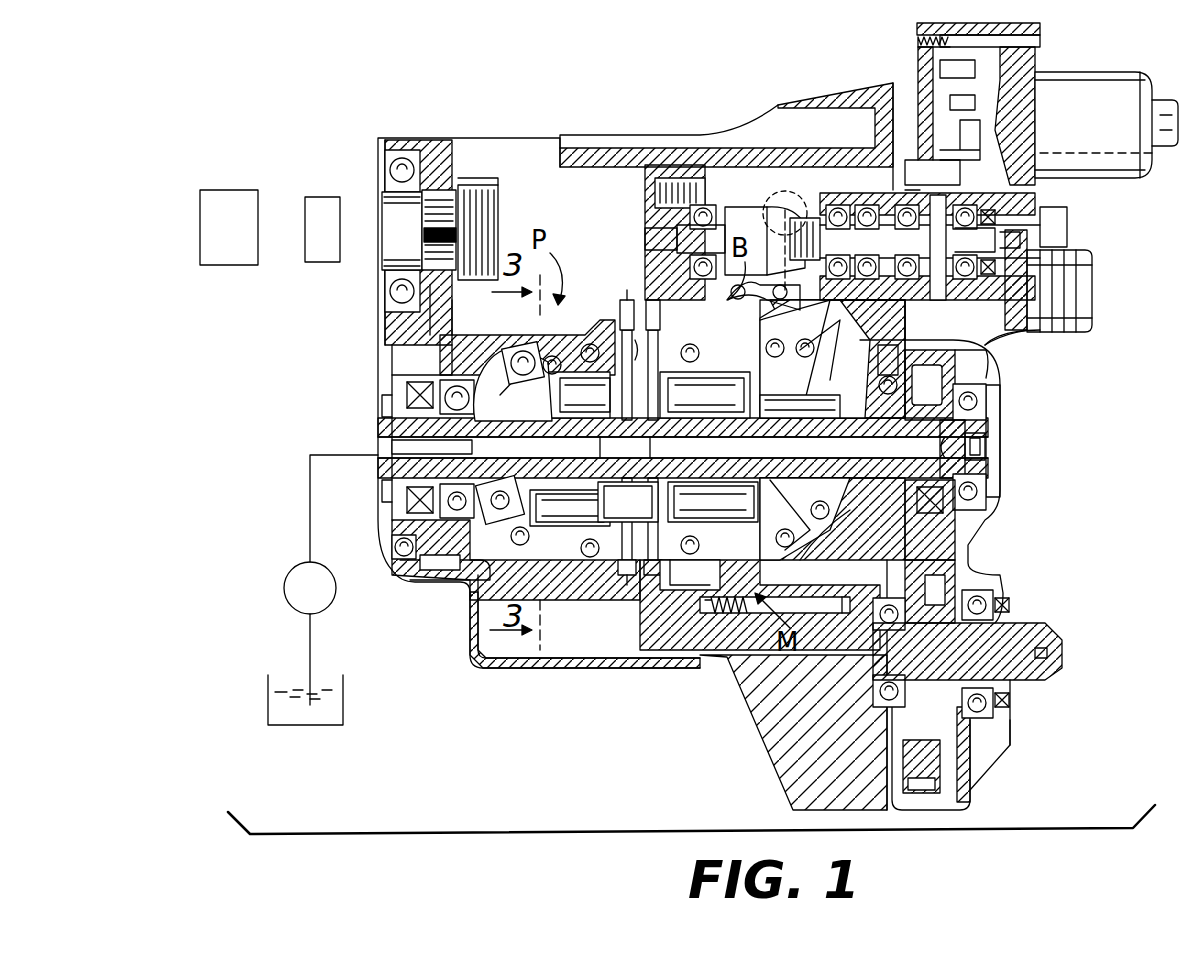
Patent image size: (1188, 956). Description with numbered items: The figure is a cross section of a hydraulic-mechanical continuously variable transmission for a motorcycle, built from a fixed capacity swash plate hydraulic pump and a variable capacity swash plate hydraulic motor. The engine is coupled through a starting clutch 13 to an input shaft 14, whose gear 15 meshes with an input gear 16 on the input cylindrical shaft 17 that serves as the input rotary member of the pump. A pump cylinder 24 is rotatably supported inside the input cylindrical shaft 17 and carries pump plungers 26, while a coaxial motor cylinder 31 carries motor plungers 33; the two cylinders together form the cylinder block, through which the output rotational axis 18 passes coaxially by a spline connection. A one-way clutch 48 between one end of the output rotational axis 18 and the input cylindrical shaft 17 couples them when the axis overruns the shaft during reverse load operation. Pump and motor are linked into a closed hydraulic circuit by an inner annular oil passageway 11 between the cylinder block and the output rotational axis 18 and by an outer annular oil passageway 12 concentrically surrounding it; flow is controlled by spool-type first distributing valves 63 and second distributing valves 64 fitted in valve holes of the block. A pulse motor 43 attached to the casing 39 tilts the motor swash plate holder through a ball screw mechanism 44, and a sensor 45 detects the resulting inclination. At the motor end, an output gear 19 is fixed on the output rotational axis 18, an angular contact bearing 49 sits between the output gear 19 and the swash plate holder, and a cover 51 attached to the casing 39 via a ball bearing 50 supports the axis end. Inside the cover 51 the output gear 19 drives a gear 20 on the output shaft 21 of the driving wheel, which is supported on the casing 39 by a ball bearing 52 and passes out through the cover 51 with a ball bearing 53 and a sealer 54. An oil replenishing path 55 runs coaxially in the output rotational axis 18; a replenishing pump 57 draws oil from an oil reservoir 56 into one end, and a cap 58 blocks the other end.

The inner annular oil passageway 11 is at (565, 340).
The outer annular oil passageway 12 is at (612, 335).
The starting clutch 13 is at (318, 212).
The input shaft 14 is at (495, 210).
The gear 15 is at (450, 318).
The input gear 16 is at (440, 568).
The input cylindrical shaft 17 is at (500, 538).
The output rotational axis 18 is at (815, 407).
The output gear 19 is at (962, 372).
The gear 20 is at (945, 565).
The output shaft 21 is at (1035, 632).
The pump cylinder 24 is at (608, 548).
The pump plungers 26 is at (548, 520).
The motor cylinder 31 is at (748, 540).
The motor plungers 33 is at (750, 505).
The casing 39 is at (690, 660).
The pulse motor 43 is at (1100, 130).
The ball screw mechanism 44 is at (768, 195).
The sensor 45 is at (1082, 290).
The one-way clutch 48 is at (392, 388).
The angular contact bearing 49 is at (895, 372).
The ball bearing 50 is at (985, 404).
The cover 51 is at (1000, 494).
The ball bearing 52 is at (850, 696).
The ball bearing 53 is at (1010, 590).
The sealer 54 is at (1015, 692).
The oil replenishing path 55 is at (790, 448).
The oil reservoir 56 is at (343, 695).
The replenishing pump 57 is at (285, 588).
The cap 58 is at (985, 446).
The first distributing valves 63 is at (625, 580).
The second distributing valves 64 is at (655, 578).